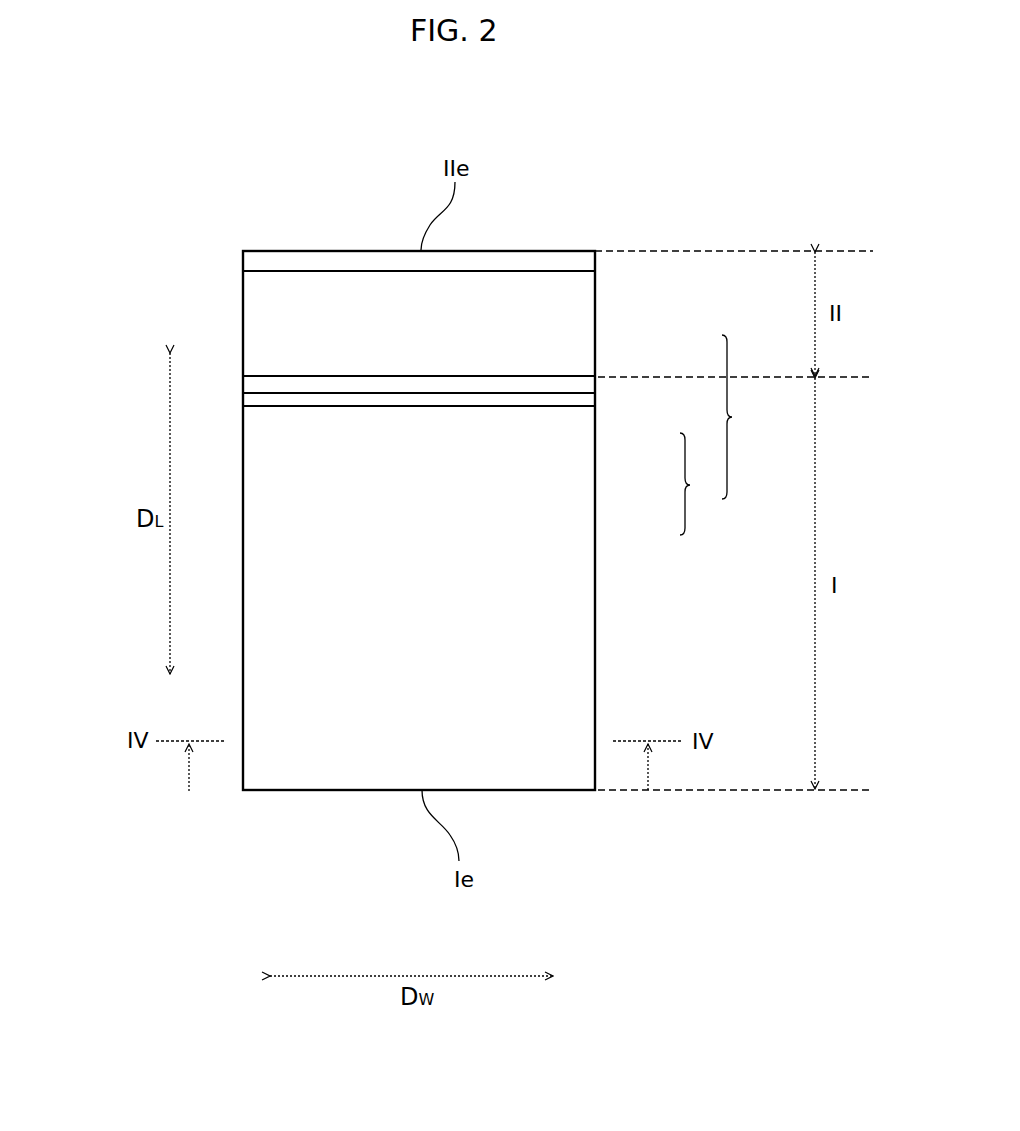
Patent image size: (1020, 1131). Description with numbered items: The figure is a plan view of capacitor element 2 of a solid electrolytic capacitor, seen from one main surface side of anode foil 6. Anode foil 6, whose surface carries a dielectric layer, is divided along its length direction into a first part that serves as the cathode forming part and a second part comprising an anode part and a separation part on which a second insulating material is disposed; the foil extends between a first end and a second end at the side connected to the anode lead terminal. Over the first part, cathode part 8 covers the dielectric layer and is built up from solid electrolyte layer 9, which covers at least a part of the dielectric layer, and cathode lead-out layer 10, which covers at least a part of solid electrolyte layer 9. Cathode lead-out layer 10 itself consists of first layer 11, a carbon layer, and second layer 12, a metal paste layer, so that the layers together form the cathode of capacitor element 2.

The capacitor element 2 is at (792, 202).
The anode foil 6 is at (516, 263).
The cathode part 8 is at (734, 417).
The solid electrolyte layer 9 is at (555, 384).
The cathode lead-out layer 10 is at (700, 484).
The first layer 11 is at (573, 400).
The second layer 12 is at (578, 313).